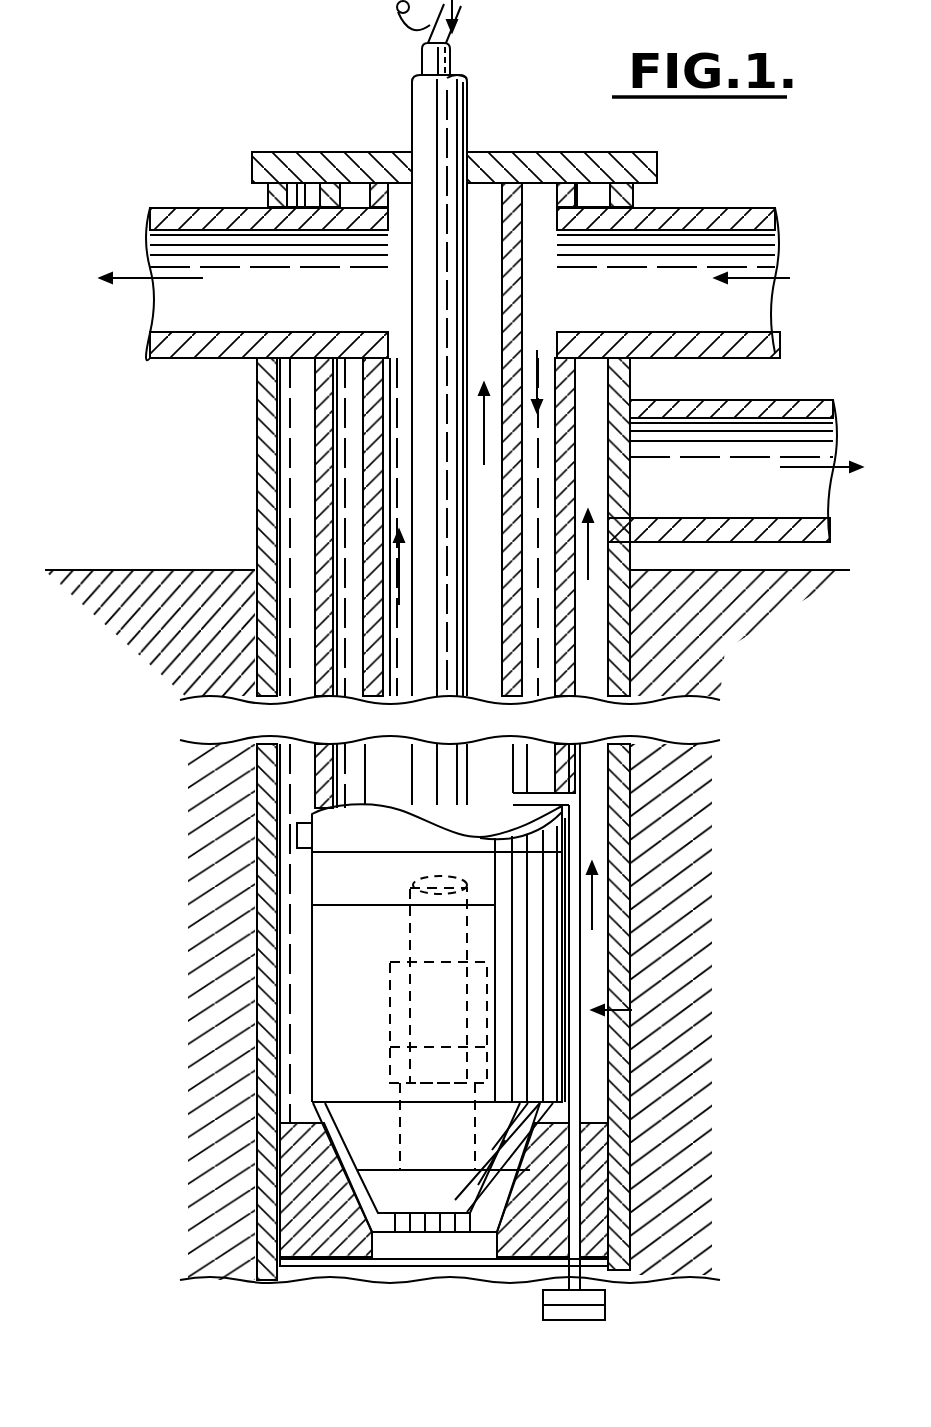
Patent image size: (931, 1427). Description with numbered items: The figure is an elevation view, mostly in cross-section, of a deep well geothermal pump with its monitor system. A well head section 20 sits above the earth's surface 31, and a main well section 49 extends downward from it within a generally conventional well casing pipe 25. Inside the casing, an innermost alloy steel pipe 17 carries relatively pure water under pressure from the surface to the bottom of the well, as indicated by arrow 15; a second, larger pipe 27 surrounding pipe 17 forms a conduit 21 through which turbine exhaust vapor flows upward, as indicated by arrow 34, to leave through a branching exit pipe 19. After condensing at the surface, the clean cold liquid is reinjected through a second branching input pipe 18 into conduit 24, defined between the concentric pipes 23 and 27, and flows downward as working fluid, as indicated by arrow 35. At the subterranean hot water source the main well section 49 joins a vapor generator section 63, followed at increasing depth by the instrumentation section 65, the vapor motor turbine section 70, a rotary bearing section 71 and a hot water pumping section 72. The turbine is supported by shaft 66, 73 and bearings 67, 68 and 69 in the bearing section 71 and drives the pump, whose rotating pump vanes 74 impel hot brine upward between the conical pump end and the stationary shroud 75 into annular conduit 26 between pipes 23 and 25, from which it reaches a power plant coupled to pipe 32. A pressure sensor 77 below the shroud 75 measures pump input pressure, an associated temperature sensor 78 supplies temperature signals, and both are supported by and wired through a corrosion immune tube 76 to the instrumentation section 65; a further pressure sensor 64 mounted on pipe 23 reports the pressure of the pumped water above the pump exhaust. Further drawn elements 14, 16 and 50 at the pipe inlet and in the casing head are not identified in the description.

The flexible hose 14 is at (455, 56).
The arrow 15 is at (460, 12).
The hose clamp 16 is at (428, 30).
The innermost alloy steel pipe 17 is at (470, 116).
The second branching input pipe 18 is at (728, 208).
The branching exit pipe 19 is at (192, 208).
The well head section 20 is at (342, 152).
The conduit 21 is at (488, 200).
The pipe 23 is at (348, 355).
The conduit 24 is at (360, 362).
The well casing pipe 25 is at (280, 434).
The annular conduit 26 is at (275, 508).
The second relatively larger pipe 27 is at (385, 444).
The earth's surface 31 is at (98, 570).
The pipe 32 is at (808, 400).
The arrow 34 is at (408, 574).
The arrow 35 is at (545, 340).
The main well section 49 is at (634, 382).
The annular passage 50 is at (600, 520).
The vapor generator section 63 is at (585, 786).
The pressure sensor 64 is at (297, 835).
The instrumentation section 65 is at (542, 792).
The shaft 66 is at (410, 893).
The bearing 67 is at (378, 950).
The bearing 68 is at (388, 1018).
The bearing 69 is at (388, 1072).
The vapor motor turbine section 70 is at (632, 815).
The rotary bearing section 71 is at (640, 988).
The hot water pumping section 72 is at (560, 1128).
The shaft 73 is at (390, 1142).
The rotating pump vanes 74 is at (540, 1138).
The stationary shroud 75 is at (512, 1236).
The corrosion immune tube 76 is at (553, 1266).
The pressure sensor 77 is at (608, 1294).
The temperature sensor 78 is at (608, 1314).